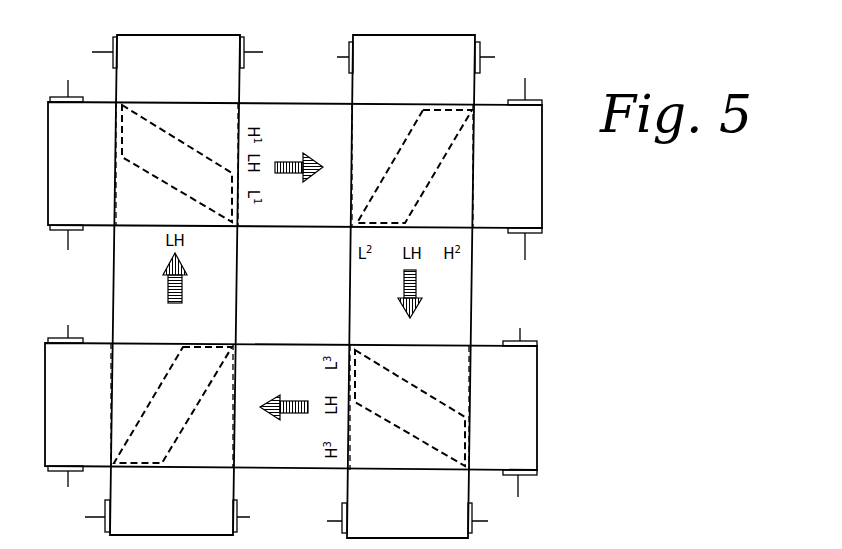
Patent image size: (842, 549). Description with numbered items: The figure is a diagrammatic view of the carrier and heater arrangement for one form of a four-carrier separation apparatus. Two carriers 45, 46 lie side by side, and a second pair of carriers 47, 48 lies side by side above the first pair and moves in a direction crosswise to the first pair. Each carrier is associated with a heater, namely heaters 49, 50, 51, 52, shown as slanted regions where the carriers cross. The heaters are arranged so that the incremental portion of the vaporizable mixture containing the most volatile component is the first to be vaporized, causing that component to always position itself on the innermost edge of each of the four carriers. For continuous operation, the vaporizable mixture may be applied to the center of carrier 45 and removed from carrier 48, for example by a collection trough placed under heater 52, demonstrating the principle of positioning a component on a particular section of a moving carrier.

The carrier 45 is at (122, 297).
The carrier 46 is at (463, 297).
The carrier 47 is at (287, 108).
The carrier 48 is at (273, 463).
The heater 49 is at (193, 148).
The heater 50 is at (437, 172).
The heater 51 is at (407, 380).
The heater 52 is at (185, 427).